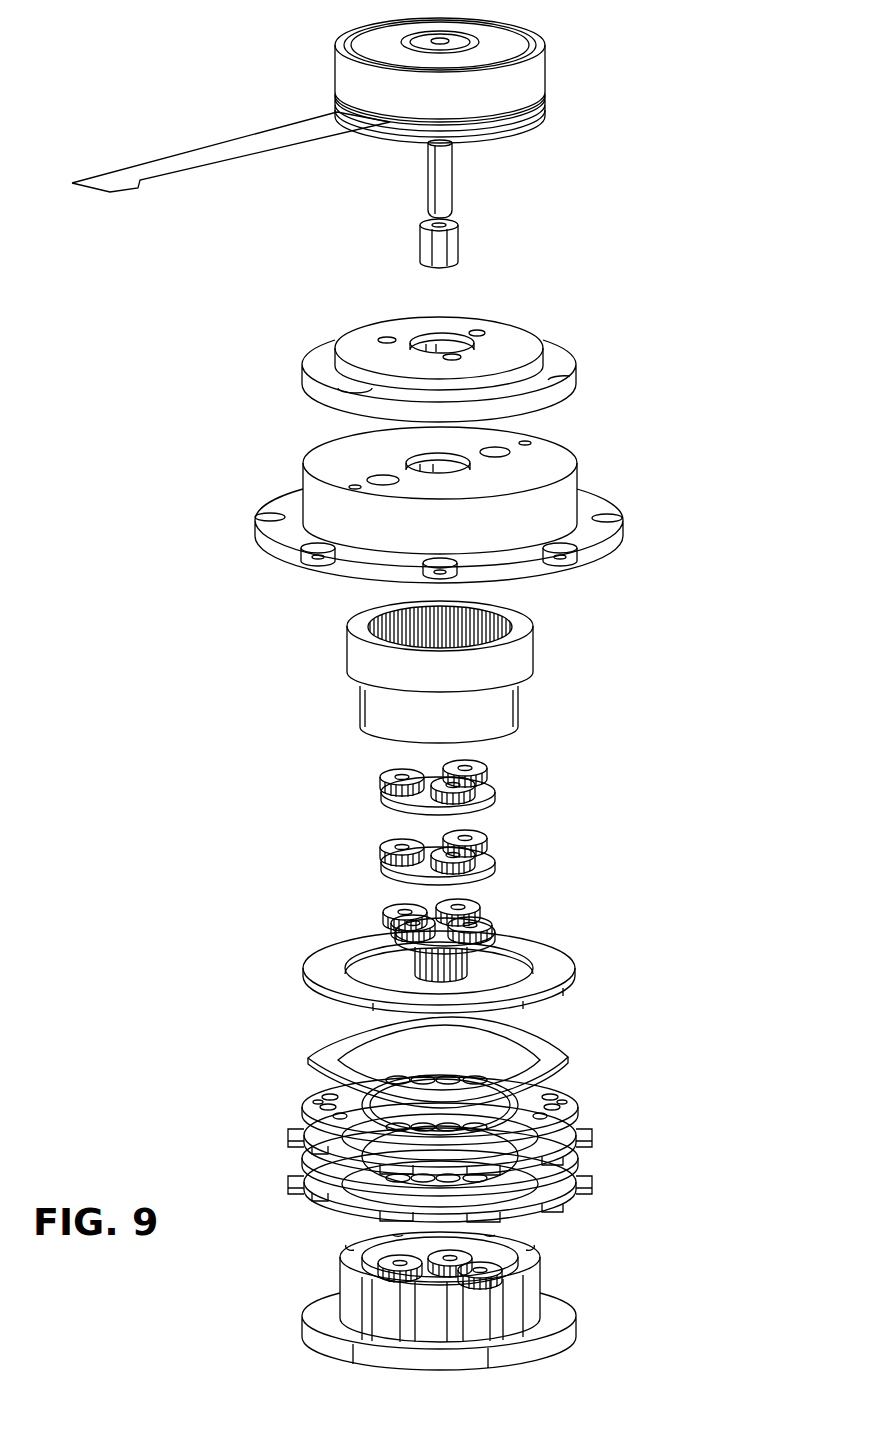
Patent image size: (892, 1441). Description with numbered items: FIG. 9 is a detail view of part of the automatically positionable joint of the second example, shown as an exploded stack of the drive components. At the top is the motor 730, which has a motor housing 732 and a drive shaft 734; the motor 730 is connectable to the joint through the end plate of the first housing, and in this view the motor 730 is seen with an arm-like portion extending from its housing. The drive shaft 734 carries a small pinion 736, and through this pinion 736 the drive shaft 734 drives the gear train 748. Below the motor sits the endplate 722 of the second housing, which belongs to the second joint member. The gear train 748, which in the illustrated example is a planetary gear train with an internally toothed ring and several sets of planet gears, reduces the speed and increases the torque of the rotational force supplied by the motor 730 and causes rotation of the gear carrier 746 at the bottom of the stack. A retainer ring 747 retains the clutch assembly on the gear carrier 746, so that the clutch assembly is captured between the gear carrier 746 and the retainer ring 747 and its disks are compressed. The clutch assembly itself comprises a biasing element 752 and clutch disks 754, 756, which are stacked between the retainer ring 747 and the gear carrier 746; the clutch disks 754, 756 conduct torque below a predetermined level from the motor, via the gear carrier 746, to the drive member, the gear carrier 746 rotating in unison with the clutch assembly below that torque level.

The endplate 722 is at (597, 500).
The motor 730 is at (550, 63).
The motor housing 732 is at (547, 83).
The drive shaft 734 is at (526, 179).
The pinion 736 is at (452, 242).
The gear carrier 746 is at (563, 1310).
The retainer ring 747 is at (565, 960).
The gear train 748 is at (577, 580).
The biasing element 752 is at (330, 1052).
The clutch disk 754 is at (562, 1098).
The clutch disk 756 is at (592, 1133).